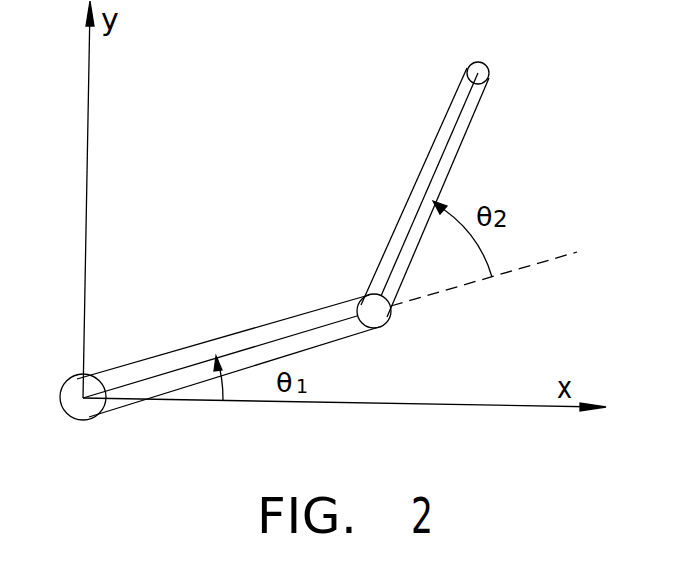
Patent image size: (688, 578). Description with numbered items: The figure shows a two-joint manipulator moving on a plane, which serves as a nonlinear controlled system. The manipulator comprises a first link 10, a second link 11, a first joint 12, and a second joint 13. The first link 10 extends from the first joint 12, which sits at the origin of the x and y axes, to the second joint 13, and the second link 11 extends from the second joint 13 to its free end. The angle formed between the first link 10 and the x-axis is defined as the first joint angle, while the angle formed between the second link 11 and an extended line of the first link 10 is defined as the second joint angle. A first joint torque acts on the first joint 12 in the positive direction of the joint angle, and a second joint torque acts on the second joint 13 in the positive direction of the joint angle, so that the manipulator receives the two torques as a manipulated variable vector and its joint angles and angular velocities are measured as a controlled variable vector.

The first link 10 is at (200, 372).
The second link 11 is at (453, 135).
The first joint 12 is at (80, 380).
The second joint 13 is at (370, 308).